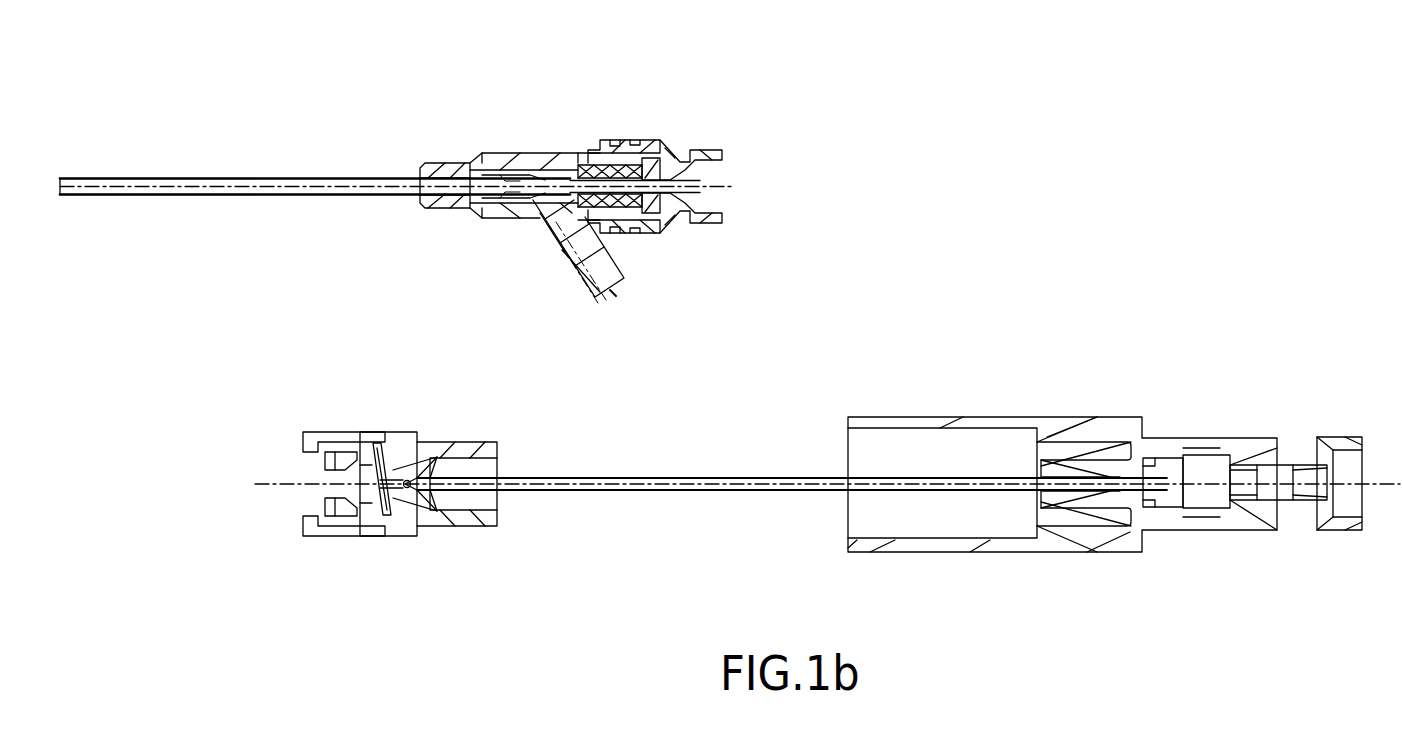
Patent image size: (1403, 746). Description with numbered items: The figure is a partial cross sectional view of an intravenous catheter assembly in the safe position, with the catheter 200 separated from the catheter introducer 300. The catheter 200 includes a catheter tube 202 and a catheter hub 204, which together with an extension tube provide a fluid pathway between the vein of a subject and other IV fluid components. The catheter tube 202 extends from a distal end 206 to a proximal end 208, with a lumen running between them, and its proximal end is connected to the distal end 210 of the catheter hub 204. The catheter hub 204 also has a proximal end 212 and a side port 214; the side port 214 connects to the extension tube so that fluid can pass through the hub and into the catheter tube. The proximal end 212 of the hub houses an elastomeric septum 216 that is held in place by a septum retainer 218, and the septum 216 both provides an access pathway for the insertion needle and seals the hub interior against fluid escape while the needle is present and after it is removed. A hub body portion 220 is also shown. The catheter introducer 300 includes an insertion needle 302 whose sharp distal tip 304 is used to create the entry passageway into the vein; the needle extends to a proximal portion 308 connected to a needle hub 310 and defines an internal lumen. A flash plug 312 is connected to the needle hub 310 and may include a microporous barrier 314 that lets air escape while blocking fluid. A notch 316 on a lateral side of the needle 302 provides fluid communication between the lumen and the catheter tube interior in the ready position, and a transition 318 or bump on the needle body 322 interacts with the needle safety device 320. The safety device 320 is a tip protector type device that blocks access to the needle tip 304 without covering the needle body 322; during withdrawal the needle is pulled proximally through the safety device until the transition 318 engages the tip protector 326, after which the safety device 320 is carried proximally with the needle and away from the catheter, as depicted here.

The catheter 200 is at (362, 122).
The catheter tube 202 is at (120, 176).
The catheter hub 204 is at (570, 136).
The distal end 206 is at (66, 195).
The proximal end 208 is at (409, 165).
The distal end 210 is at (432, 208).
The proximal end 212 is at (600, 152).
The side port 214 is at (584, 272).
The elastomeric septum 216 is at (638, 226).
The septum retainer 218 is at (672, 158).
The connector body 220 is at (522, 156).
The catheter introducer 300 is at (1150, 362).
The insertion needle 302 is at (513, 490).
The sharp distal tip 304 is at (400, 437).
The proximal portion 308 is at (1122, 470).
The needle hub 310 is at (1142, 553).
The flash plug 312 is at (1312, 455).
The microporous barrier 314 is at (1282, 505).
The notch 316 is at (437, 460).
The transition 318 is at (439, 520).
The needle safety device 320 is at (370, 553).
The needle body 322 is at (712, 478).
The tip protector 326 is at (372, 444).